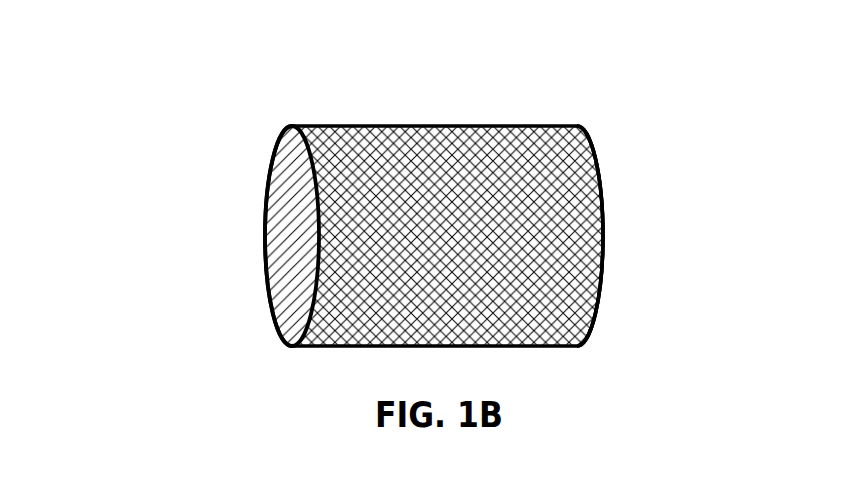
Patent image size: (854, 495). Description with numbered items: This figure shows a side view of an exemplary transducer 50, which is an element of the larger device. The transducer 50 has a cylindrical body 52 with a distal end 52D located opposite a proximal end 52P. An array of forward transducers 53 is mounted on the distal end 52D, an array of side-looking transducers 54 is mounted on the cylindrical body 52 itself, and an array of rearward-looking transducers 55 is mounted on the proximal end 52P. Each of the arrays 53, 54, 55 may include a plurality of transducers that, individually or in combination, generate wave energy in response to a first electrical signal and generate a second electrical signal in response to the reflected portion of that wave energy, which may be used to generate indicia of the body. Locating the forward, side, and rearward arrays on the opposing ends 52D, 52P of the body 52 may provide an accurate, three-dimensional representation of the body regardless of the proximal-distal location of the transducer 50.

The transducer 50 is at (162, 153).
The cylindrical body 52 is at (588, 342).
The distal end 52D is at (292, 115).
The proximal end 52P is at (576, 115).
The array of forward transducers 53 is at (267, 255).
The array of side-looking transducers 54 is at (468, 175).
The array of rearward-looking transducers 55 is at (603, 263).